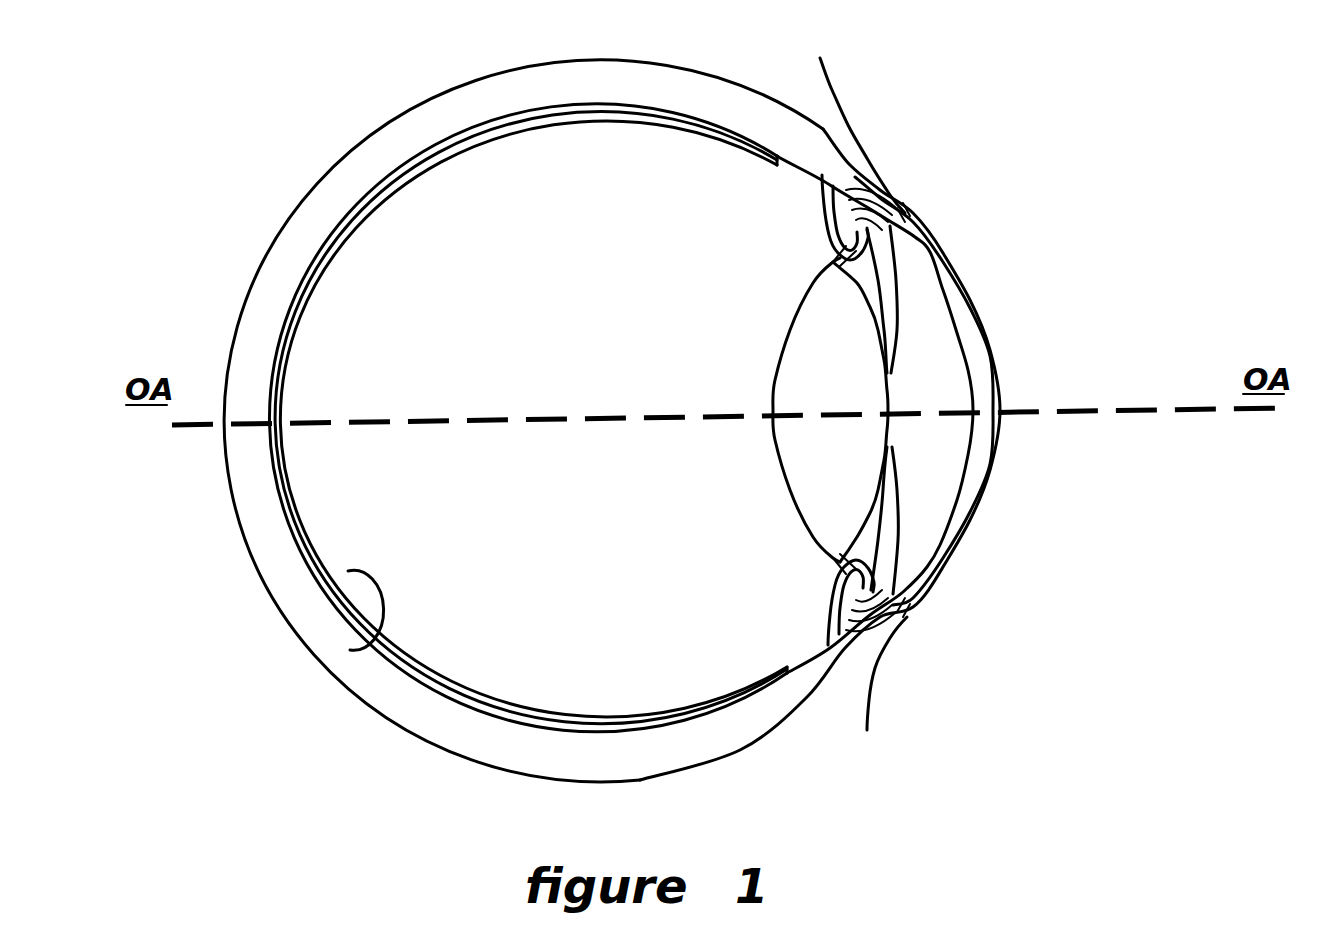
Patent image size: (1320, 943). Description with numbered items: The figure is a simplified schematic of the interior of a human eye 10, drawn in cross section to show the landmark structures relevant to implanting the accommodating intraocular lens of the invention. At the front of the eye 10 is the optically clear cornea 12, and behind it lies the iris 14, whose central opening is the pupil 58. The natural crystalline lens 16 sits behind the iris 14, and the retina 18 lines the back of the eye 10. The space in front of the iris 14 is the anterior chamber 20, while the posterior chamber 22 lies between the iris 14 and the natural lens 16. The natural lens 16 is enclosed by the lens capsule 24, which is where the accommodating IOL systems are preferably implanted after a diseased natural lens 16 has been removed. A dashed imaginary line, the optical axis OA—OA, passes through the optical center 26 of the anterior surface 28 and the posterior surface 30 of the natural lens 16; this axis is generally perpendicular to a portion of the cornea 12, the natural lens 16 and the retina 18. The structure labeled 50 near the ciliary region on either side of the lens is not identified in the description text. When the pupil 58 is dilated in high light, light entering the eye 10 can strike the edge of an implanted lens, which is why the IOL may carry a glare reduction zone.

The eye 10 is at (1113, 218).
The cornea 12 is at (997, 363).
The iris 14 is at (900, 533).
The natural crystalline lens 16 is at (820, 307).
The retina 18 is at (350, 650).
The anterior chamber 20 is at (933, 480).
The posterior chamber 22 is at (900, 500).
The lens capsule 24 is at (803, 450).
The optical center 26 is at (773, 410).
The anterior surface 28 is at (890, 428).
The posterior surface 30 is at (805, 507).
The ciliary body 50 is at (850, 290).
The pupil 58 is at (890, 385).